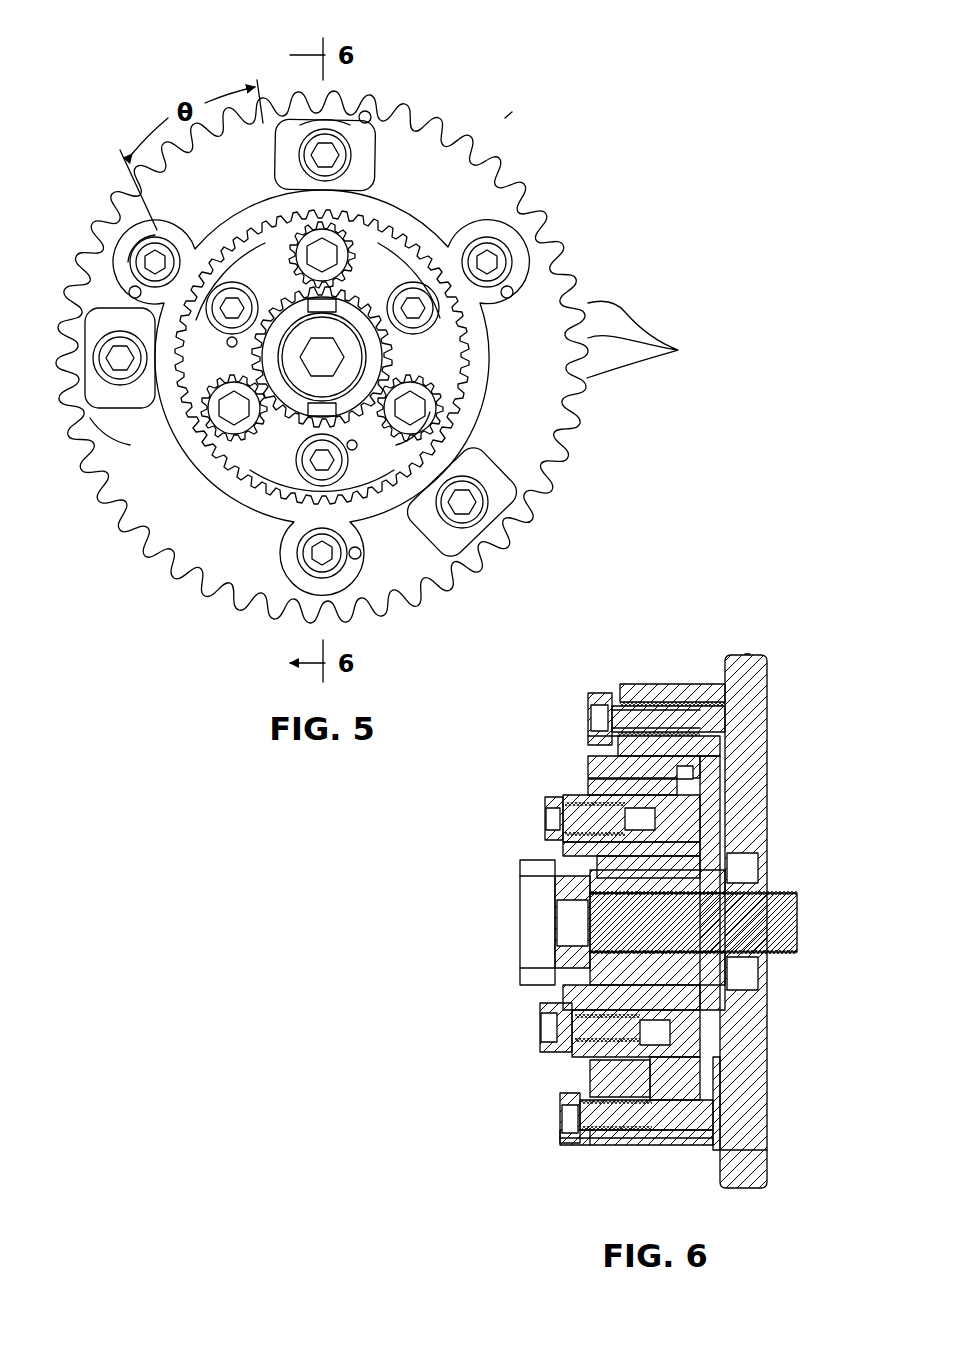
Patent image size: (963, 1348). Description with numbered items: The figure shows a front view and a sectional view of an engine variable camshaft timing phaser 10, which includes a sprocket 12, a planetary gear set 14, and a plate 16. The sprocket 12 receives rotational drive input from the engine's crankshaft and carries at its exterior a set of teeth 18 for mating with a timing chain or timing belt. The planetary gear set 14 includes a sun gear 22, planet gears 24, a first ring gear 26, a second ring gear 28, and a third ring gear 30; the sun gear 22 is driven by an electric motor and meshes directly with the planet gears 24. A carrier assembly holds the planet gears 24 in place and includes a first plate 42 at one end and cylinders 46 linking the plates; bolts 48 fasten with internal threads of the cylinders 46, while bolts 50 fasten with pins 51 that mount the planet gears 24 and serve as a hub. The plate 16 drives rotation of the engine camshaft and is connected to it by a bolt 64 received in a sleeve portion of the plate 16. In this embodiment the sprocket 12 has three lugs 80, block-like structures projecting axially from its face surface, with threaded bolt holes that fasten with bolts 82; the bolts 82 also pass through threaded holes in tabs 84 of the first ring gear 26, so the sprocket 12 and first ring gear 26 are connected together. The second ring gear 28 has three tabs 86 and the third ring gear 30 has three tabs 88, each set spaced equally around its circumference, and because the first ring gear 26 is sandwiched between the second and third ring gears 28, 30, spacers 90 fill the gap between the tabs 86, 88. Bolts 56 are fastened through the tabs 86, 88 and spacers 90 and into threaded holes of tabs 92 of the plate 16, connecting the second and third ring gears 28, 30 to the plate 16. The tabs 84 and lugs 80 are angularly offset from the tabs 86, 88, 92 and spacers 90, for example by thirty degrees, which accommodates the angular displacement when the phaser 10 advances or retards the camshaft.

In FIG. 5, the phaser 10 is at (512, 112).
In FIG. 6, the phaser 10 is at (808, 650).
In FIG. 5, the sprocket 12 is at (510, 163).
In FIG. 6, the sprocket 12 is at (742, 655).
In FIG. 5, the planetary gear set 14 is at (255, 198).
In FIG. 6, the planetary gear set 14 is at (585, 753).
In FIG. 6, the plate 16 is at (720, 822).
In FIG. 5, the set of teeth 18 is at (650, 339).
In FIG. 5, the sun gear 22 is at (115, 427).
In FIG. 6, the sun gear 22 is at (520, 918).
In FIG. 5, the planet gears 24 is at (352, 240).
In FIG. 6, the planet gears 24 is at (588, 785).
In FIG. 5, the first ring gear 26 is at (360, 160).
In FIG. 6, the first ring gear 26 is at (640, 718).
In FIG. 6, the second ring gear 28 is at (680, 700).
In FIG. 5, the third ring gear 30 is at (157, 232).
In FIG. 6, the third ring gear 30 is at (592, 740).
In FIG. 5, the first plate 42 is at (272, 285).
In FIG. 6, the cylinders 46 is at (565, 998).
In FIG. 5, the bolts 48 is at (413, 300).
In FIG. 6, the bolts 48 is at (545, 1026).
In FIG. 5, the bolts 50 is at (432, 414).
In FIG. 6, the bolts 50 is at (548, 818).
In FIG. 6, the pins 51 is at (565, 850).
In FIG. 5, the bolts 56 is at (150, 262).
In FIG. 6, the bolts 56 is at (565, 1140).
In FIG. 5, the bolt 64 is at (345, 358).
In FIG. 6, the bolt 64 is at (798, 917).
In FIG. 6, the lugs 80 is at (705, 684).
In FIG. 5, the bolts 82 is at (360, 150).
In FIG. 6, the bolts 82 is at (598, 700).
In FIG. 5, the tabs 84 is at (352, 133).
In FIG. 6, the tabs 84 is at (622, 690).
In FIG. 6, the tabs 86 is at (705, 1070).
In FIG. 5, the tabs 88 is at (112, 282).
In FIG. 6, the tabs 88 is at (585, 1118).
In FIG. 6, the spacers 90 is at (625, 1146).
In FIG. 6, the tabs 92 is at (716, 1110).